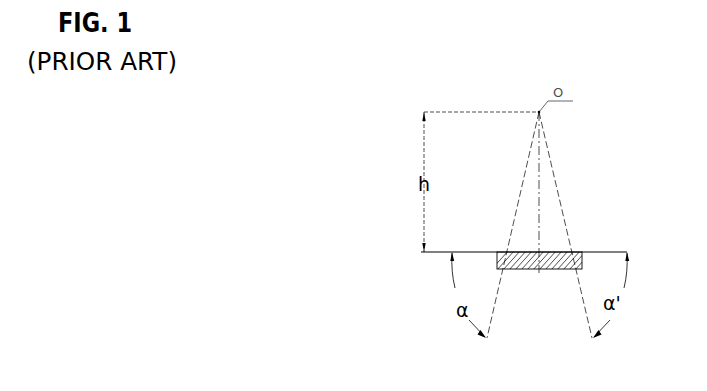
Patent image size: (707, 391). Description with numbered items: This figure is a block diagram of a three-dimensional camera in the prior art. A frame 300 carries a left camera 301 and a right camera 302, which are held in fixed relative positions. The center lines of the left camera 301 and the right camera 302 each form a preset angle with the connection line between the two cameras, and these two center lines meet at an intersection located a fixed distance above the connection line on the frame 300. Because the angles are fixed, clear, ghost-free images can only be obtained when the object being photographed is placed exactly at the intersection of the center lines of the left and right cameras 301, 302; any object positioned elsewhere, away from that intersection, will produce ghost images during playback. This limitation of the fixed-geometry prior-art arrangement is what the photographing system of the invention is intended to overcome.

The frame 300 is at (542, 292).
The left camera 301 is at (490, 225).
The right camera 302 is at (588, 225).